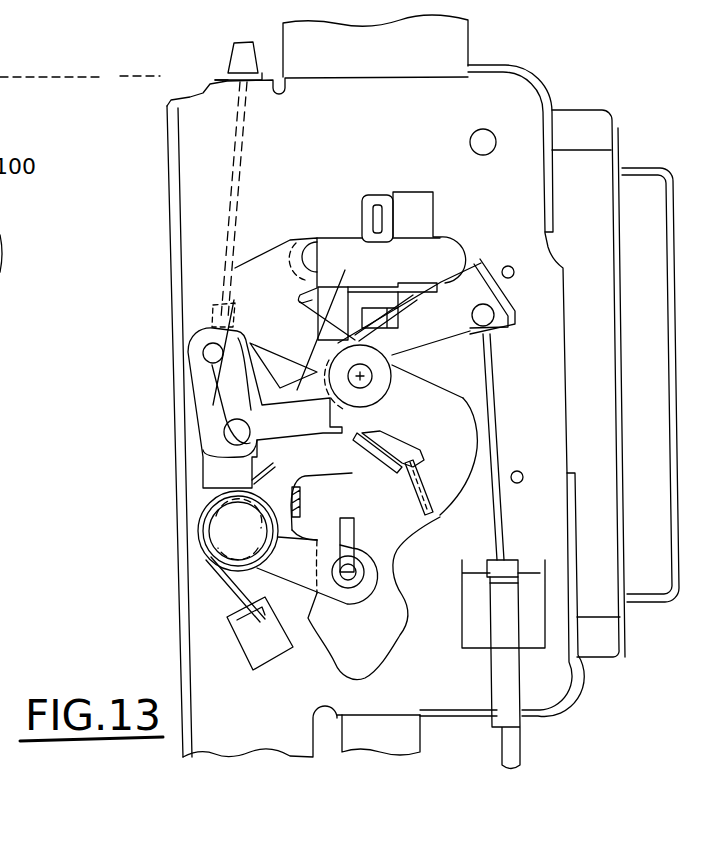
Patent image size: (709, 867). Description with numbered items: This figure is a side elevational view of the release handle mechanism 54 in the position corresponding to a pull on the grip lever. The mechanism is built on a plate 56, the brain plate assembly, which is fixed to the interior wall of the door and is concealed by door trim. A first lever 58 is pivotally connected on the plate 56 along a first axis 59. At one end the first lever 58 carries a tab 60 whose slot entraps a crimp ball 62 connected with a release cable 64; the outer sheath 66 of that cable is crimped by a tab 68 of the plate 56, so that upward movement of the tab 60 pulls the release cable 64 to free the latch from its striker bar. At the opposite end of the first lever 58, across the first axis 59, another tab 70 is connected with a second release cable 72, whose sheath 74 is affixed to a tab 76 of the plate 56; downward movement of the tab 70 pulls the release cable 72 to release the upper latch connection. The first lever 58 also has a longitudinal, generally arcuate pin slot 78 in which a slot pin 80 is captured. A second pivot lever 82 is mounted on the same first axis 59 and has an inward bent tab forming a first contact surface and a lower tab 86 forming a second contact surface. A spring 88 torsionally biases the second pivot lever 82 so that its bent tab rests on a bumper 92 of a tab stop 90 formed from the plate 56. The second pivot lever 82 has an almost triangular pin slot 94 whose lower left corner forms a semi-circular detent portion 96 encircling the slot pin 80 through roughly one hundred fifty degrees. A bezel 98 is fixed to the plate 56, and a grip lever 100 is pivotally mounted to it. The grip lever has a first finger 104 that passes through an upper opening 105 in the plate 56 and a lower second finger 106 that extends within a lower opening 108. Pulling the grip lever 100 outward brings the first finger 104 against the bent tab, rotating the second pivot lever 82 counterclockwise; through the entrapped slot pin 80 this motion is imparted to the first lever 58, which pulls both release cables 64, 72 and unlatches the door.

The release handle mechanism 54 is at (500, 52).
The plate 56 is at (447, 722).
The first lever 58 is at (443, 283).
The first axis 59 is at (367, 380).
The tab 60 is at (514, 328).
The crimp ball 62 is at (496, 306).
The release cable 64 is at (498, 421).
The outer sheath 66 is at (545, 712).
The tab 68 is at (527, 568).
The tab 70 is at (265, 400).
The release cable 72 is at (252, 137).
The sheath 74 is at (230, 58).
The tab 76 is at (215, 77).
The pin slot 78 is at (330, 470).
The slot pin 80 is at (205, 343).
The second pivot lever 82 is at (443, 392).
The lower tab 86 is at (418, 508).
The spring 88 is at (378, 313).
The tab stop 90 is at (378, 205).
The bumper 92 is at (398, 200).
The pin slot 94 is at (250, 372).
The semi-circular detent portion 96 is at (224, 432).
The bezel 98 is at (615, 131).
The grip lever 100 is at (670, 328).
The first finger 104 is at (313, 258).
The upper opening 105 is at (441, 236).
The second finger 106 is at (288, 538).
The lower opening 108 is at (342, 648).